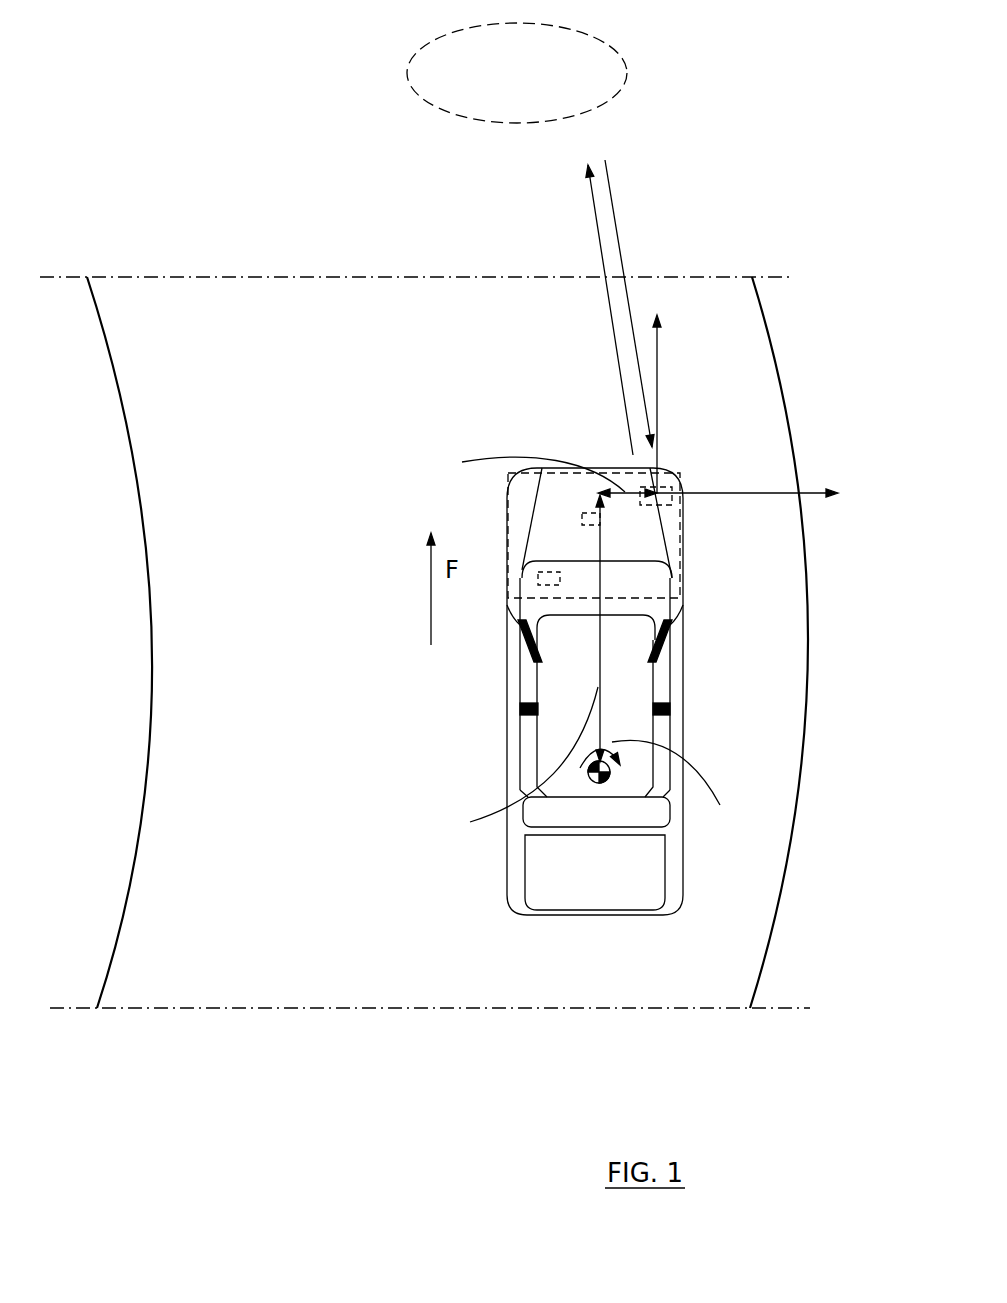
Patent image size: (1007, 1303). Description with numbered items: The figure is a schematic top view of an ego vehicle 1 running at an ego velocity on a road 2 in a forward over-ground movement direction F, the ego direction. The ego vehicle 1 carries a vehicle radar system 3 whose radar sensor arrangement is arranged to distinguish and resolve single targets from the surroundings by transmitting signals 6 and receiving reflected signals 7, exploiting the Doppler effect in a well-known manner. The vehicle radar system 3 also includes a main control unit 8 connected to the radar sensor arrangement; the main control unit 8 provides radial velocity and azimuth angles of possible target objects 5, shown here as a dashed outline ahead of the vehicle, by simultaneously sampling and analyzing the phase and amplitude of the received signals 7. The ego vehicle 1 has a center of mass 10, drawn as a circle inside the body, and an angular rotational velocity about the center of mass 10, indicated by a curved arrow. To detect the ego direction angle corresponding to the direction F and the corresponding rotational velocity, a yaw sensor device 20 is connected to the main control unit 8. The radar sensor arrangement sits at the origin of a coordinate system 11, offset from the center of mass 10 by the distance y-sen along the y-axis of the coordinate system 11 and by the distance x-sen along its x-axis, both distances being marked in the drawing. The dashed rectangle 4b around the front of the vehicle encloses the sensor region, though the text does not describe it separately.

The ego vehicle 1 is at (618, 695).
The road 2 is at (193, 750).
The vehicle radar system 3 is at (646, 505).
The sensor detection region 4b is at (683, 595).
The target object 5 is at (445, 35).
The transmitted signals 6 is at (608, 180).
The received reflected signals 7 is at (618, 236).
The main control unit 8 is at (592, 525).
The center of mass 10 is at (596, 783).
The coordinate system 11 is at (722, 468).
The yaw sensor device 20 is at (547, 585).